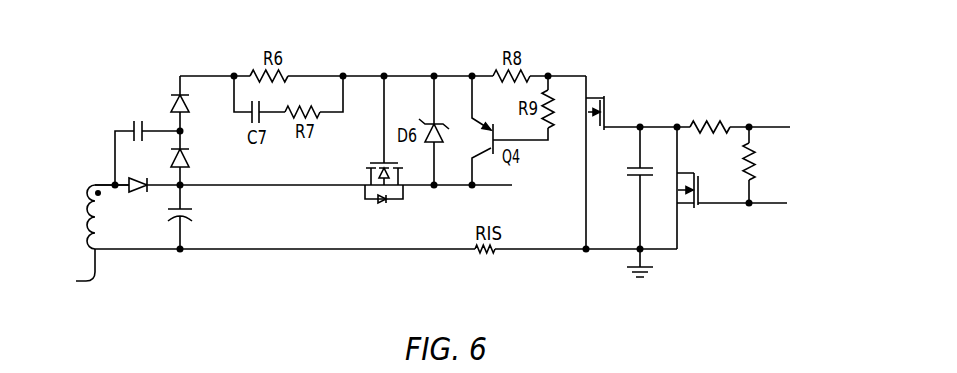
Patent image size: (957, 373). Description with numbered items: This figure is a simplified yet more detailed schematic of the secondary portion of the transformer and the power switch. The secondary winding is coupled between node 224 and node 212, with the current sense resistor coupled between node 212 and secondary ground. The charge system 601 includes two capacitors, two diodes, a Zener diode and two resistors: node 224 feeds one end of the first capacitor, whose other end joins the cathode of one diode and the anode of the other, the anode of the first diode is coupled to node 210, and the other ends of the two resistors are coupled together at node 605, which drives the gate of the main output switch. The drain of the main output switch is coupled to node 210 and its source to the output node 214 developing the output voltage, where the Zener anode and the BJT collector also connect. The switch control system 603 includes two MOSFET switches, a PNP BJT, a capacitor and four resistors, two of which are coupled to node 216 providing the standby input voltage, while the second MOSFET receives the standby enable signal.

The charge system 601 is at (110, 80).
The switch control system 603 is at (732, 163).
The node 605 is at (384, 76).
The node 224 is at (114, 185).
The node 210 is at (184, 184).
The node 212 is at (184, 248).
The output node 214 is at (436, 188).
The node 216 is at (749, 127).